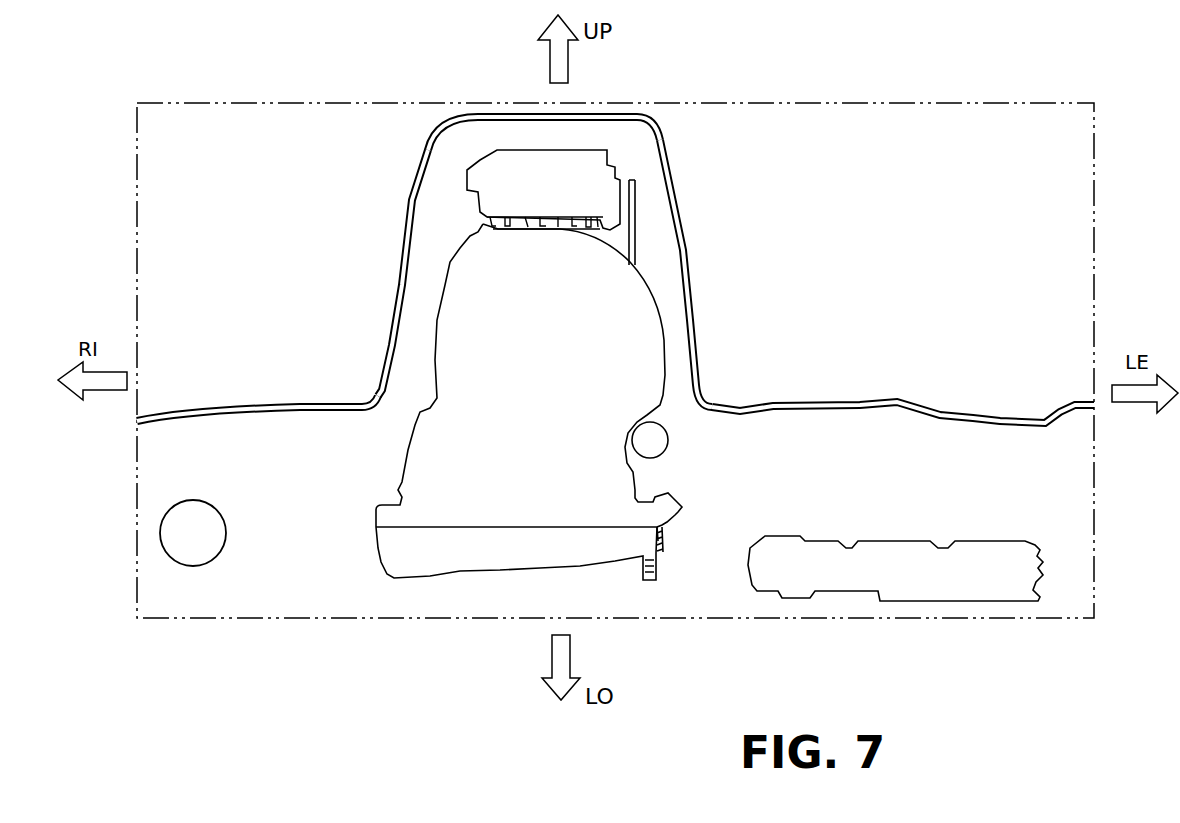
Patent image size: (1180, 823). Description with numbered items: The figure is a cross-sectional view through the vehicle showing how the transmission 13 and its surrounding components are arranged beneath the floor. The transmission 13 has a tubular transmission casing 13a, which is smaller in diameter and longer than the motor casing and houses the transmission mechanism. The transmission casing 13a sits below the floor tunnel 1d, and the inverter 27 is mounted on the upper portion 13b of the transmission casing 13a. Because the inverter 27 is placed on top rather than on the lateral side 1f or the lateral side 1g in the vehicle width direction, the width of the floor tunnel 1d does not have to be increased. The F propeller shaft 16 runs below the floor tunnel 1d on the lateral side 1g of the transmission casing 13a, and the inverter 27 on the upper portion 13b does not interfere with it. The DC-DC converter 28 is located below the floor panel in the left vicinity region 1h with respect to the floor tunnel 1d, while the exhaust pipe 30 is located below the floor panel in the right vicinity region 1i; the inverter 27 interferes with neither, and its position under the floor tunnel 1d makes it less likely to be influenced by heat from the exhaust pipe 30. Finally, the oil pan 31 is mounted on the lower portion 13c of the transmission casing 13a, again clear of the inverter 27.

The floor tunnel 1d is at (662, 120).
The lateral side 1f is at (410, 322).
The lateral side 1g is at (675, 323).
The left vicinity region 1h is at (915, 437).
The right vicinity region 1i is at (255, 437).
The transmission 13 is at (447, 480).
The transmission casing 13a is at (648, 268).
The upper portion 13b is at (555, 215).
The lower portion 13c is at (597, 531).
The F propeller shaft 16 is at (668, 438).
The inverter 27 is at (513, 185).
The DC-DC converter 28 is at (907, 583).
The exhaust pipe 30 is at (223, 552).
The oil pan 31 is at (467, 548).